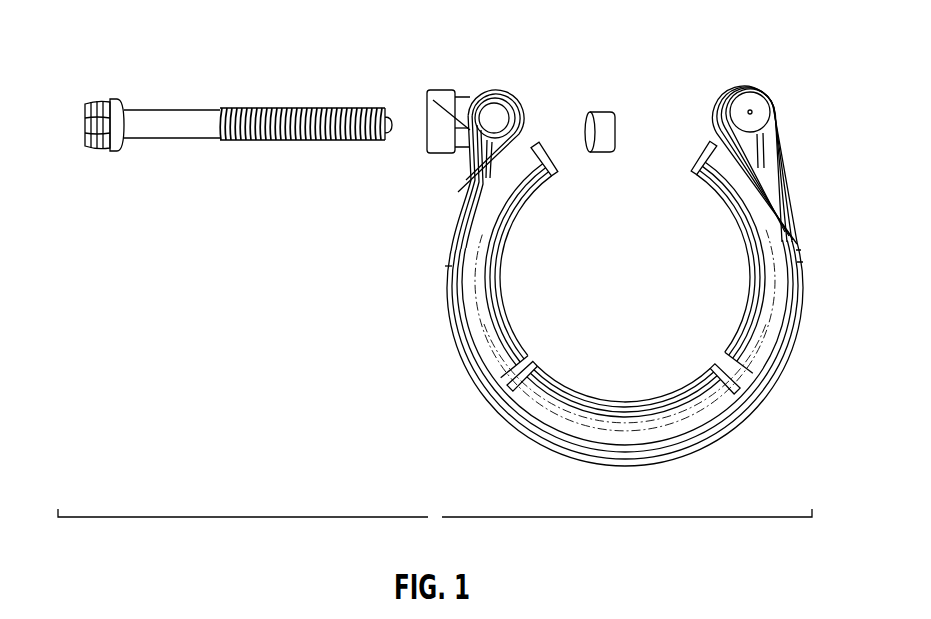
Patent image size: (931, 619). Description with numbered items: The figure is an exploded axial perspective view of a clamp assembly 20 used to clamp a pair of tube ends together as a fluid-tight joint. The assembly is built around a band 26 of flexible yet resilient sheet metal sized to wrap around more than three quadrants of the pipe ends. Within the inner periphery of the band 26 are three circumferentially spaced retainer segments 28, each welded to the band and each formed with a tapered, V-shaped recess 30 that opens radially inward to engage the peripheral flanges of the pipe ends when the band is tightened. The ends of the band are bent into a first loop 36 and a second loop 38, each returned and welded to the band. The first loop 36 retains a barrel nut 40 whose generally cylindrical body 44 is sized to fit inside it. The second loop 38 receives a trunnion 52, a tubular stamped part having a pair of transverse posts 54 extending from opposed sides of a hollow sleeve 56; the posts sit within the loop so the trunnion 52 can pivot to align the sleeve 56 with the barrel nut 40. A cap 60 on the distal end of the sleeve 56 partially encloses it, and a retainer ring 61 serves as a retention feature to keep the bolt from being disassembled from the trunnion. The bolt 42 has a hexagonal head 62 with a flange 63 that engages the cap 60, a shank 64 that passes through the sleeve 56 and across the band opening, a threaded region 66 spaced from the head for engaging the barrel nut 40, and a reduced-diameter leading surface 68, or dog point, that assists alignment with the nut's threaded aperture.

The clamp assembly 20 is at (428, 517).
The band 26 is at (714, 442).
The retainer segments 28 is at (771, 183).
The recess 30 is at (760, 287).
The first loop 36 is at (772, 118).
The second loop 38 is at (498, 92).
The barrel nut 40 is at (756, 100).
The bolt 42 is at (96, 95).
The cylindrical body 44 is at (751, 112).
The trunnion 52 is at (470, 92).
The transverse posts 54 is at (522, 100).
The sleeve 56 is at (433, 100).
The cap 60 is at (440, 118).
The retainer ring 61 is at (604, 112).
The head 62 is at (92, 120).
The flange 63 is at (100, 150).
The shank 64 is at (182, 110).
The threaded region 66 is at (282, 120).
The leading surface 68 is at (432, 105).